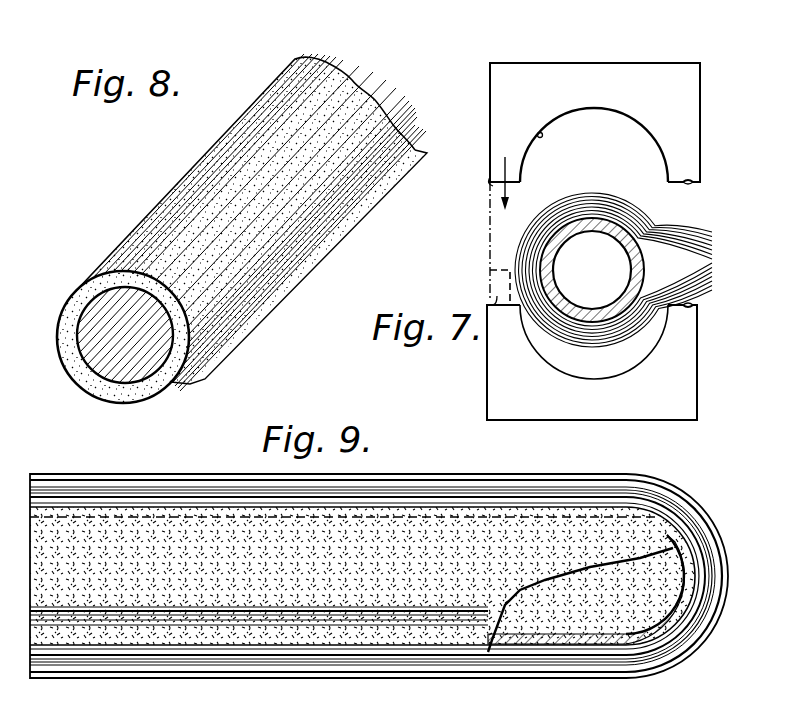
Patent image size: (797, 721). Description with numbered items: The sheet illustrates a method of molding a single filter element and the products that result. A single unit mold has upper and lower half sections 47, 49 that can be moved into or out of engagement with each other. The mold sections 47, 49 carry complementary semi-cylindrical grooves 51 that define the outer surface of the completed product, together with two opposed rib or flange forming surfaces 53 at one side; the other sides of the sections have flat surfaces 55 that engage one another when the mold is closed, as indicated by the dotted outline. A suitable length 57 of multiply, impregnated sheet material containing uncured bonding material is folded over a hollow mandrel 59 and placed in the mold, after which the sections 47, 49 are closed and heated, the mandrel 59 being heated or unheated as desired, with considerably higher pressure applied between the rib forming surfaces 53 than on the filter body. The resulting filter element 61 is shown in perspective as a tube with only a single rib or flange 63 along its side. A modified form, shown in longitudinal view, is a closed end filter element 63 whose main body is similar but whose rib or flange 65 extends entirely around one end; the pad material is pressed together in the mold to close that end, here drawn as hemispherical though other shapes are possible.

In FIG. 7, the upper mold half section 47 is at (638, 73).
In FIG. 7, the lower mold half section 49 is at (682, 414).
In FIG. 7, the semi-cylindrical groove 51 is at (538, 134).
In FIG. 7, the rib or flange forming surface 53 is at (688, 183).
In FIG. 7, the flat surface 55 is at (490, 185).
In FIG. 7, the length of multiply impregnated sheet material 57 is at (522, 256).
In FIG. 7, the hollow mandrel 59 is at (558, 252).
In FIG. 8, the filter element 61 is at (166, 200).
In FIG. 8, the rib or flange 63 is at (240, 345).
In FIG. 9, the rib or flange 63 is at (108, 622).
In FIG. 9, the rib or flange 65 is at (670, 655).